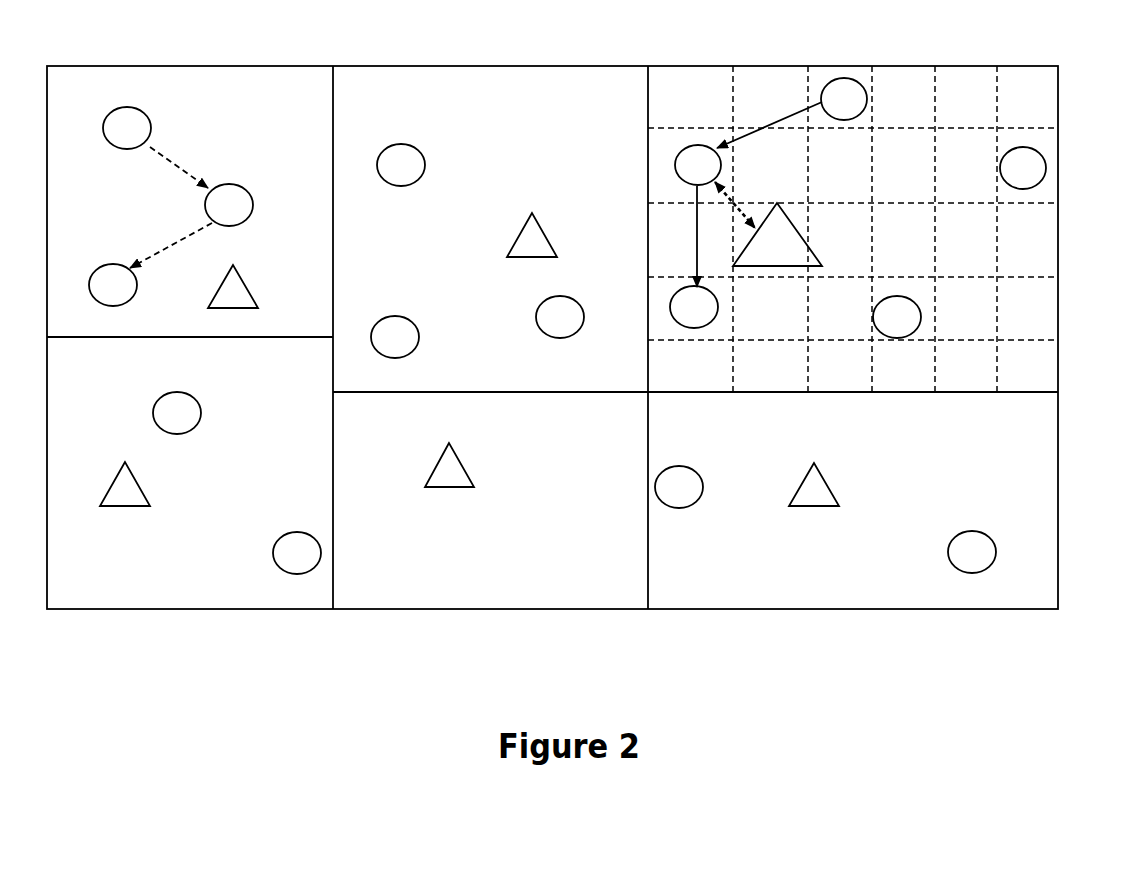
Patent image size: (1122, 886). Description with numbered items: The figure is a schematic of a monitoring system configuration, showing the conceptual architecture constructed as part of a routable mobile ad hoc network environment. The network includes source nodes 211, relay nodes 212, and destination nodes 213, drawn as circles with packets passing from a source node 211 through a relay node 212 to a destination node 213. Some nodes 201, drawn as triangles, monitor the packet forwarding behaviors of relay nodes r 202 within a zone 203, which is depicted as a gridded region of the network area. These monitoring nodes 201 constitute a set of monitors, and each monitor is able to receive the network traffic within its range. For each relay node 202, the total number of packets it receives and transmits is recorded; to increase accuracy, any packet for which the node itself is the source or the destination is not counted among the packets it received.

The monitor node 201 is at (248, 292).
The relay node r 202 is at (709, 148).
The zone 203 is at (918, 66).
The source node 211 is at (143, 116).
The relay node 212 is at (235, 181).
The destination node 213 is at (116, 264).